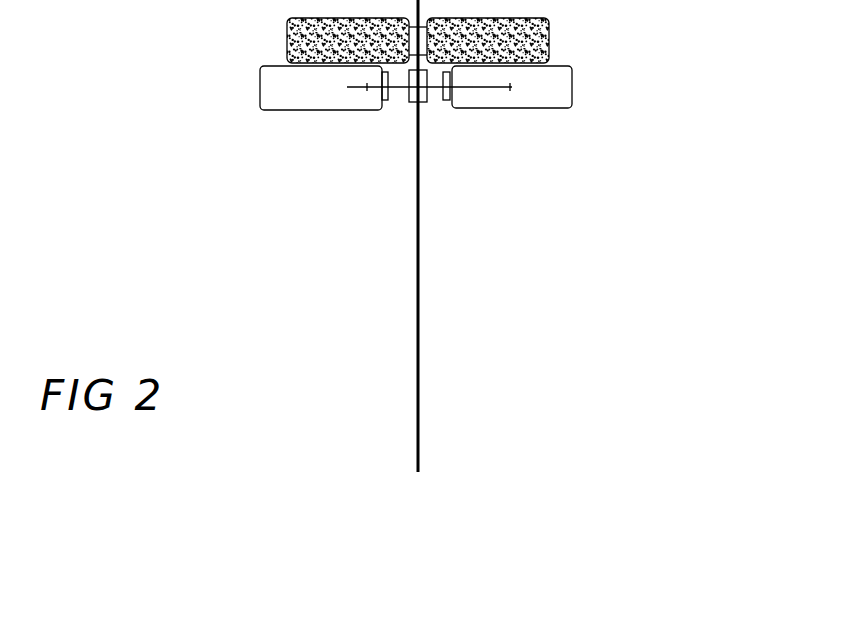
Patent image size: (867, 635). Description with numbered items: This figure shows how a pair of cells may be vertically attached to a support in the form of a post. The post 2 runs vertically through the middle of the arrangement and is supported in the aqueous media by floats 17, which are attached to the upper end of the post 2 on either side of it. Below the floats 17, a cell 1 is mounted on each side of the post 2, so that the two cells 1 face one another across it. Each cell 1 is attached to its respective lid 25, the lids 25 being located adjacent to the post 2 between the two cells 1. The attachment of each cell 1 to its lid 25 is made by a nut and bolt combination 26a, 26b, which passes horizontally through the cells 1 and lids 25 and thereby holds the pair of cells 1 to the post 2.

The post 2 is at (432, 353).
The floats 17 is at (268, 37).
The cells 1 is at (243, 90).
The lids 25 is at (407, 116).
The nut and bolt combination 26a is at (355, 104).
The nut and bolt combination 26b is at (528, 95).